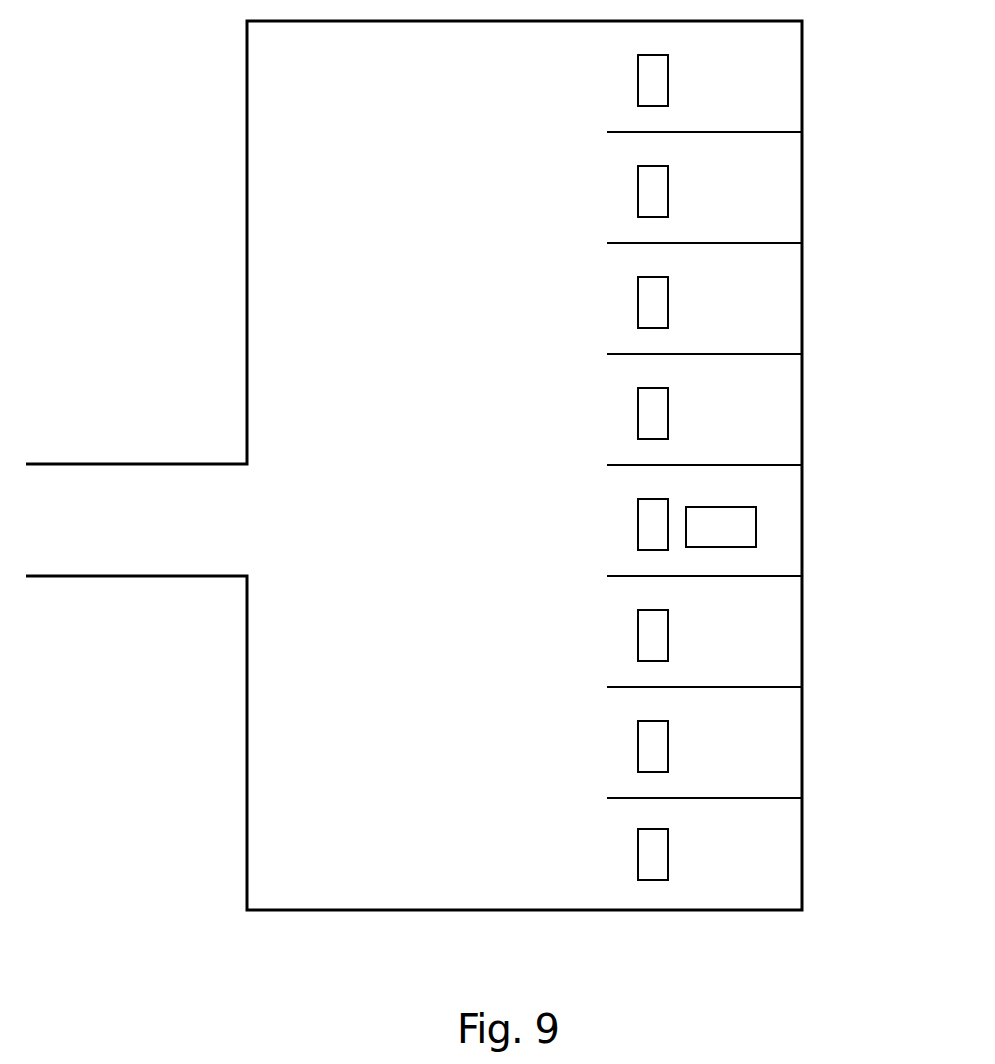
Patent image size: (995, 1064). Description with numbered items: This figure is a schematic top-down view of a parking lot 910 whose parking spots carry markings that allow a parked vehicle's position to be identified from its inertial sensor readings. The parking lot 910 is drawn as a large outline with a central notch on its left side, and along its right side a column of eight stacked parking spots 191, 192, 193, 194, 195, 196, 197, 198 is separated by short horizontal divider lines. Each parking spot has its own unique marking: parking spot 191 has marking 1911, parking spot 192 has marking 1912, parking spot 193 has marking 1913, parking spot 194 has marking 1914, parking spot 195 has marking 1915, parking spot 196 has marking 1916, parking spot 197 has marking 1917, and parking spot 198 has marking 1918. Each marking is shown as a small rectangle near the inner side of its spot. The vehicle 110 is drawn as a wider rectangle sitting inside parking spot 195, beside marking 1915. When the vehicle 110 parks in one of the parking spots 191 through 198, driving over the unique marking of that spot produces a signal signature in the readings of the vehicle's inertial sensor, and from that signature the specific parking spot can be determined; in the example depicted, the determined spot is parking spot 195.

The parking lot 910 is at (290, 257).
The parking spot 191 is at (767, 87).
The parking spot 192 is at (767, 198).
The parking spot 193 is at (767, 309).
The parking spot 194 is at (767, 420).
The parking spot 195 is at (773, 517).
The parking spot 196 is at (767, 642).
The parking spot 197 is at (767, 753).
The parking spot 198 is at (767, 864).
The marking 1911 is at (655, 83).
The marking 1912 is at (655, 194).
The marking 1913 is at (655, 305).
The marking 1914 is at (655, 416).
The marking 1915 is at (661, 506).
The marking 1916 is at (655, 638).
The marking 1917 is at (655, 749).
The marking 1918 is at (655, 860).
The vehicle 110 is at (733, 533).